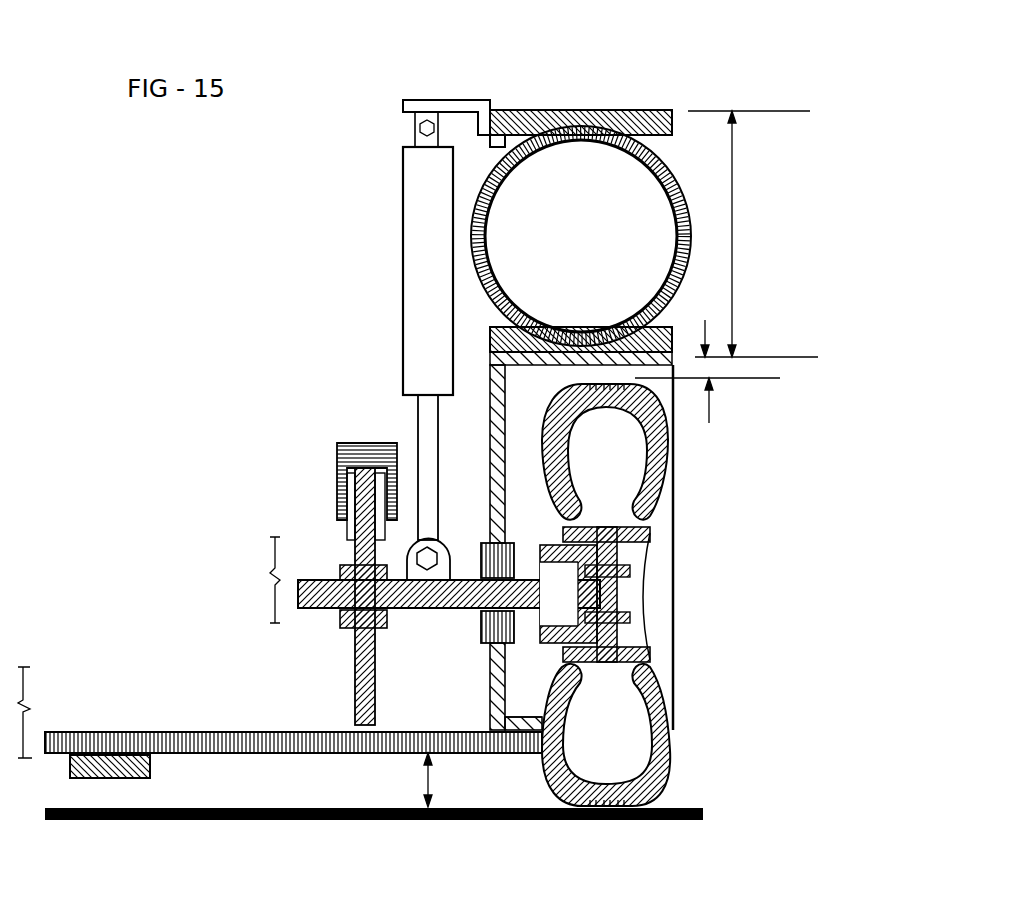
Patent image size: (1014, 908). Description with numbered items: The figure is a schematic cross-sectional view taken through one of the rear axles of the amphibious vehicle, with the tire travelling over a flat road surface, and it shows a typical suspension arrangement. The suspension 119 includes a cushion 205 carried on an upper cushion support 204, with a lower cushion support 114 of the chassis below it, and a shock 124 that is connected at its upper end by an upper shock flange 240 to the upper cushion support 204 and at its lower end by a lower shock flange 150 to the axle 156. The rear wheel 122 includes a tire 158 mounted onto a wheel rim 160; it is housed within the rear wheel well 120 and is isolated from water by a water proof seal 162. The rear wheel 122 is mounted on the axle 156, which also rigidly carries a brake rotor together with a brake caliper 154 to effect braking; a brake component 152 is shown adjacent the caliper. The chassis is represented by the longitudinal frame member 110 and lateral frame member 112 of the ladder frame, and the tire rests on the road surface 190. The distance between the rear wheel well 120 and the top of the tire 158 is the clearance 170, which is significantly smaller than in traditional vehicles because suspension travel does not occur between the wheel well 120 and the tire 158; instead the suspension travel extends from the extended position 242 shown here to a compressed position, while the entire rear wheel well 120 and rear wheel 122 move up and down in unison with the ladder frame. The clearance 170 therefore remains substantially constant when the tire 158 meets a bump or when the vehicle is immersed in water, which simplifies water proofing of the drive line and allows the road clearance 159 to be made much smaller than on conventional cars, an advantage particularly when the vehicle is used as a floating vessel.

The suspension 119 is at (258, 224).
The upper shock flange 240 is at (461, 110).
The upper cushion support 204 is at (522, 130).
The cushion 205 is at (627, 110).
The extended position 242 is at (732, 255).
The lower cushion support 114 is at (490, 332).
The rear wheel well 120 is at (490, 505).
The shock 124 is at (425, 248).
The lower shock flange 150 is at (408, 537).
The brake caliper 154 is at (337, 453).
The vertical post 152 is at (357, 662).
The axle 156 is at (298, 593).
The water proof seal 162 is at (628, 583).
The wheel rim 160 is at (650, 533).
The tire 158 is at (672, 720).
The rear wheel 122 is at (595, 812).
The clearance 170 is at (712, 422).
The lateral frame member 112 is at (248, 755).
The longitudinal frame member 110 is at (118, 778).
The ground surface 190 is at (642, 822).
The road clearance 159 is at (423, 765).